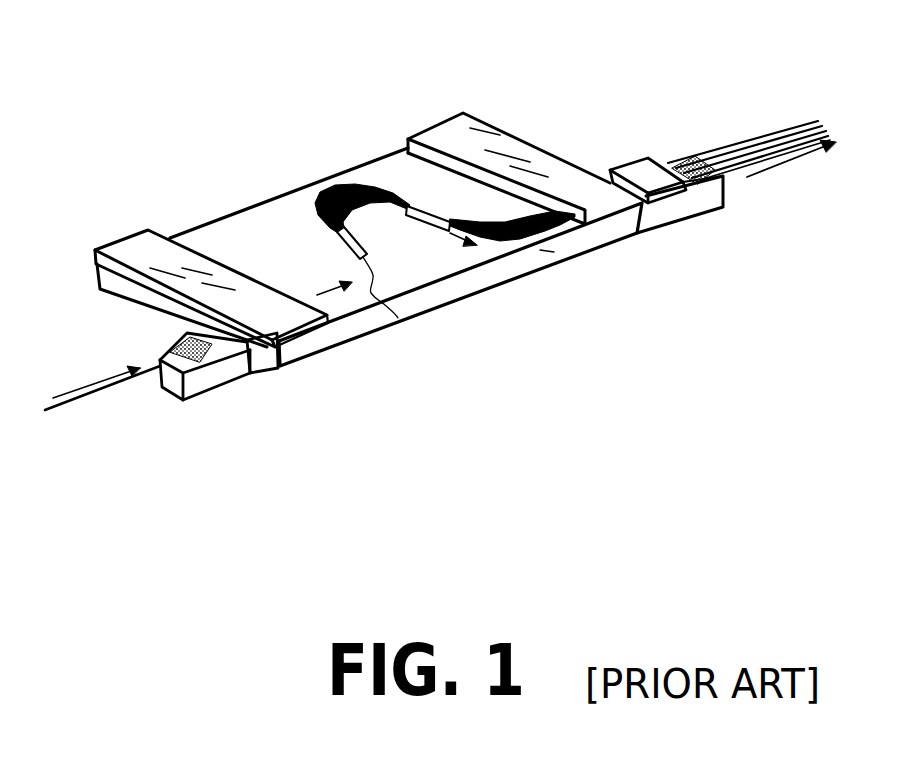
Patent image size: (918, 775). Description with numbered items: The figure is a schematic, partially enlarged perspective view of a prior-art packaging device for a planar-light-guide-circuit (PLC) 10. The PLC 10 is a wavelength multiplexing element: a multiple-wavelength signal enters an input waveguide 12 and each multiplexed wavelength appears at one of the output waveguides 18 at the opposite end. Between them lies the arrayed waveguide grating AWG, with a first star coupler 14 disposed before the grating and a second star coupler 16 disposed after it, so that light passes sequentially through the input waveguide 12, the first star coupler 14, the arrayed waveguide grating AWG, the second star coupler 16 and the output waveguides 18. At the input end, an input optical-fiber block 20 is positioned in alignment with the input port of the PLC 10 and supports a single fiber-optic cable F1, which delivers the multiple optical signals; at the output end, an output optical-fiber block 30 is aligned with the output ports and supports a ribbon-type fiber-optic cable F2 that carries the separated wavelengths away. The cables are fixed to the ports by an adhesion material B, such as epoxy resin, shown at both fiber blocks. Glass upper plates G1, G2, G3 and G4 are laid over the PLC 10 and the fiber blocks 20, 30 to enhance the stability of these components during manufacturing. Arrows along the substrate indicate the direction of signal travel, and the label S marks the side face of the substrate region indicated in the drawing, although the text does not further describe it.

The planar-light-guide-circuit (PLC) 10 is at (518, 325).
The input waveguide 12 is at (400, 323).
The first star coupler 14 is at (340, 247).
The second star coupler 16 is at (414, 204).
The output waveguides 18 is at (520, 215).
The input optical-fiber block 20 is at (222, 370).
The output optical-fiber block 30 is at (683, 205).
The glass upper plate G1 is at (287, 347).
The glass upper plate G2 is at (157, 257).
The glass upper plate G3 is at (468, 138).
The glass upper plate G4 is at (642, 170).
The adhesion material B is at (175, 353).
The arrayed waveguide grating AWG is at (325, 188).
The single fiber-optic cable F1 is at (122, 383).
The ribbon-type fiber-optic cable F2 is at (752, 133).
The side surface of substrate S is at (554, 252).